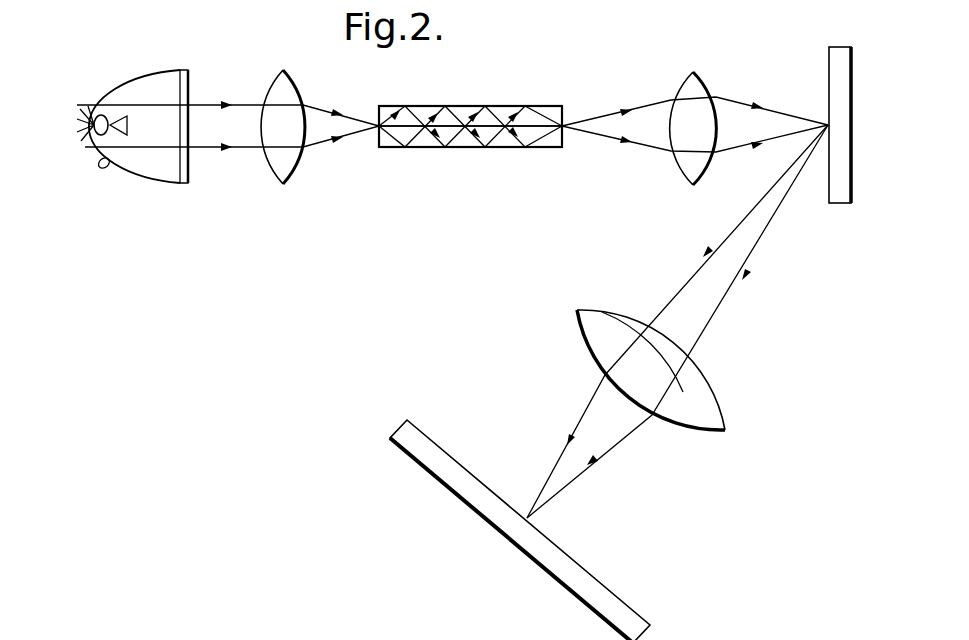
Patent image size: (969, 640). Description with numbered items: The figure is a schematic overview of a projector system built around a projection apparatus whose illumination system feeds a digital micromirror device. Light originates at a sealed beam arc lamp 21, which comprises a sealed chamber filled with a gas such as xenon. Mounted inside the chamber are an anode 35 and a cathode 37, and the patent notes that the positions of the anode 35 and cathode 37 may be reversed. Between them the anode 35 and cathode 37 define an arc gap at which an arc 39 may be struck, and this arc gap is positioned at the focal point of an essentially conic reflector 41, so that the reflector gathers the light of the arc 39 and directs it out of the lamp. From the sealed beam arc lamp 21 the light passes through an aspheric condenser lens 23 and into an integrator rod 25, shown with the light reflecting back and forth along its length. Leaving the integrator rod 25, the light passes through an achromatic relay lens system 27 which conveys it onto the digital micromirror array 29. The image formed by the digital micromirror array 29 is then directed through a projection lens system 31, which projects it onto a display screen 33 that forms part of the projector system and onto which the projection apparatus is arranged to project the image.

The sealed beam arc lamp 21 is at (126, 200).
The aspheric condenser lens 23 is at (283, 186).
The integrator rod 25 is at (500, 149).
The achromatic relay lens system 27 is at (693, 187).
The digital micromirror array 29 is at (840, 204).
The projection lens system 31 is at (726, 424).
The display screen 33 is at (418, 443).
The anode 35 is at (80, 128).
The cathode 37 is at (121, 118).
The arc 39 is at (92, 104).
The conic reflector 41 is at (103, 170).